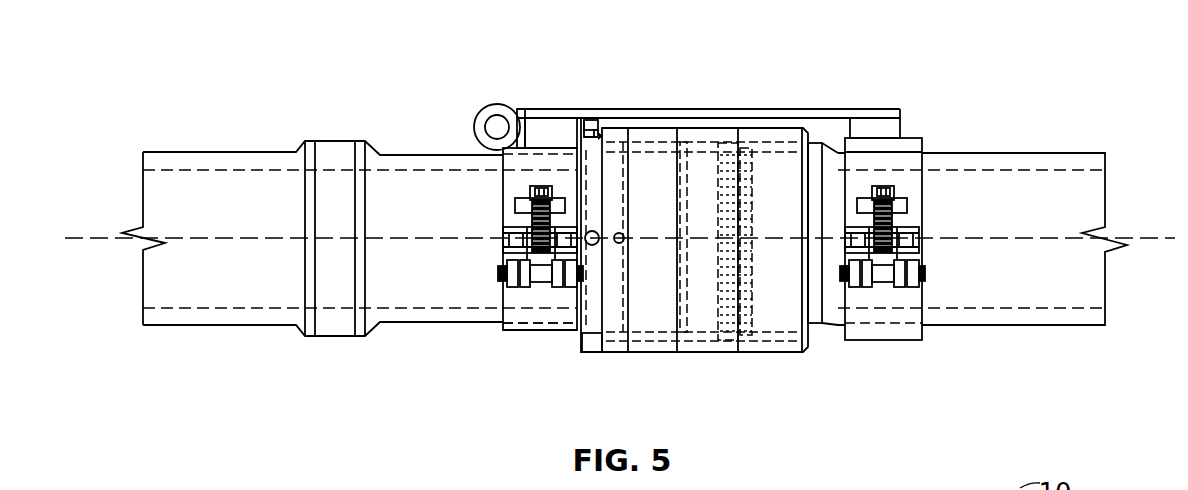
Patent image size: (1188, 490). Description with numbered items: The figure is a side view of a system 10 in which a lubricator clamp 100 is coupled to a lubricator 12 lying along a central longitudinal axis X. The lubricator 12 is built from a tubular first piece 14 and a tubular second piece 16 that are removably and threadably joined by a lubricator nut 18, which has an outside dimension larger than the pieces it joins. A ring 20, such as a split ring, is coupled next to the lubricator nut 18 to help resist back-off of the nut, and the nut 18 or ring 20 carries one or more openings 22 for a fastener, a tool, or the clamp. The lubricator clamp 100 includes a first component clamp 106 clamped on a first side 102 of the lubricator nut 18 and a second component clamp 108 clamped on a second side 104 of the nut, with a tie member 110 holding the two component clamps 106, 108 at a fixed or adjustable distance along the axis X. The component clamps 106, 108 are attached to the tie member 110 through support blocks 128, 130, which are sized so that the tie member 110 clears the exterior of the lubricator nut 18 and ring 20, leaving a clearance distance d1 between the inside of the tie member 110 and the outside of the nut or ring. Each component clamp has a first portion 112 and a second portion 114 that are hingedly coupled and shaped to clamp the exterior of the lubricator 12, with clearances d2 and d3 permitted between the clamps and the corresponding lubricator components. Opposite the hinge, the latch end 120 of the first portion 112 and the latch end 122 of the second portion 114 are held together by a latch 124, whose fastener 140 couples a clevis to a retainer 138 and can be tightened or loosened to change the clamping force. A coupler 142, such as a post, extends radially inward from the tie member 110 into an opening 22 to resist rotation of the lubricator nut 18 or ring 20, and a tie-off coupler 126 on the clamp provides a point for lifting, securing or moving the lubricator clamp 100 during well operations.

The system 10 is at (970, 50).
The lubricator 12 is at (1084, 123).
The first piece 14 is at (397, 148).
The second piece 16 is at (1054, 332).
The lubricator nut 18 is at (697, 358).
The ring 20 is at (582, 358).
The opening 22 is at (600, 353).
The lubricator clamp 100 is at (631, 104).
The first side 102 is at (458, 153).
The second side 104 is at (835, 328).
The first component clamp 106 is at (925, 152).
The second component clamp 108 is at (501, 176).
The tie member 110 is at (792, 108).
The first portion 112 is at (537, 147).
The second portion 114 is at (556, 332).
The latch end 120 is at (925, 229).
The latch end 122 is at (925, 275).
The latch 124 is at (491, 188).
The coupler 126 is at (497, 98).
The support block 128 is at (563, 120).
The support block 130 is at (877, 128).
The retainer 138 is at (908, 195).
The fastener 140 is at (880, 185).
The coupler 142 is at (592, 120).
The clearance distance d1 is at (709, 122).
The clearance d2 is at (890, 150).
The clearance d3 is at (524, 335).
The central longitudinal axis X is at (88, 241).